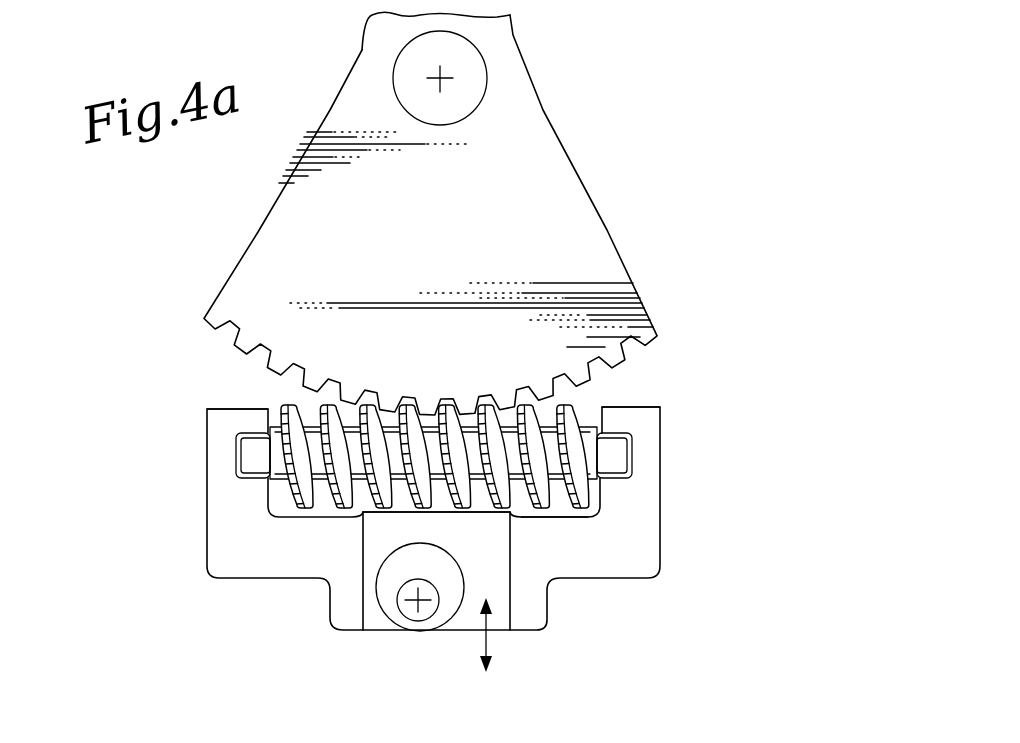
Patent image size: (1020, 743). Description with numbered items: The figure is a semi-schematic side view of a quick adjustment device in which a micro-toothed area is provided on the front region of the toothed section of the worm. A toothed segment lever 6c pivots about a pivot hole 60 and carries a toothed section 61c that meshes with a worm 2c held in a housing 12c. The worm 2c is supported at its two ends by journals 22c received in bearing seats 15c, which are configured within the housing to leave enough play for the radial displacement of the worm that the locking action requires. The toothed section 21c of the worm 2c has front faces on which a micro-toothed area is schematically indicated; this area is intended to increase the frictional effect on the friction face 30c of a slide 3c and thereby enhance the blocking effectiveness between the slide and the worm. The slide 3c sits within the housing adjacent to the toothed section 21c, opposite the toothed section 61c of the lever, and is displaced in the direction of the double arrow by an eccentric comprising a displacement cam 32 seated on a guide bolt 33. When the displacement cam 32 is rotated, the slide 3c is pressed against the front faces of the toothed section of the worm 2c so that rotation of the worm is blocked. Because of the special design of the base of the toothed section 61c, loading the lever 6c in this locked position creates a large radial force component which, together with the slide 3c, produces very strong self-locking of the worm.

The pivot hole 60 is at (455, 70).
The toothed segment lever 6c is at (434, 213).
The toothed section of the toothed segment lever 61c is at (511, 366).
The bearing seats 15c is at (248, 418).
The worm shaft journal 22c is at (250, 460).
The housing 12c is at (450, 517).
The toothed section of the worm 21c is at (584, 524).
The worm 2c is at (434, 537).
The friction face of the slide 30c is at (481, 524).
The slide 3c is at (358, 634).
The guide bolt 33 is at (372, 615).
The displacement cam 32 is at (411, 614).